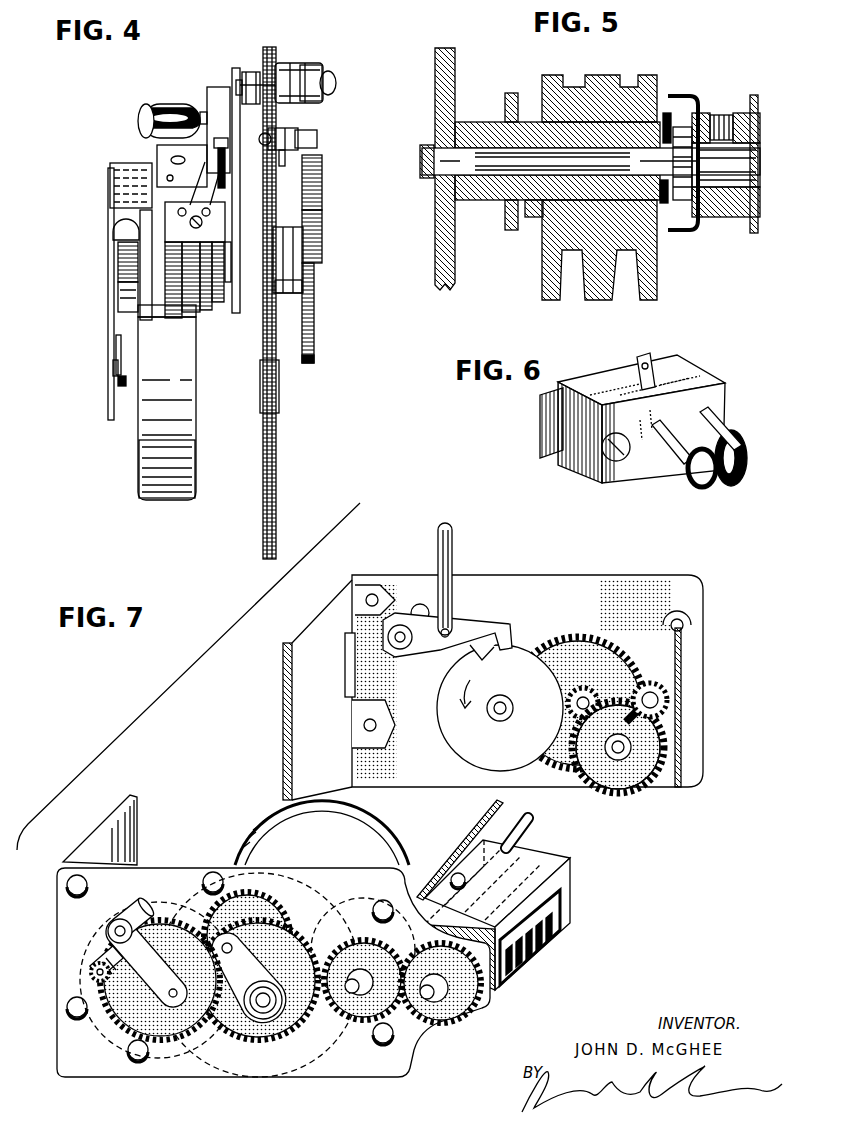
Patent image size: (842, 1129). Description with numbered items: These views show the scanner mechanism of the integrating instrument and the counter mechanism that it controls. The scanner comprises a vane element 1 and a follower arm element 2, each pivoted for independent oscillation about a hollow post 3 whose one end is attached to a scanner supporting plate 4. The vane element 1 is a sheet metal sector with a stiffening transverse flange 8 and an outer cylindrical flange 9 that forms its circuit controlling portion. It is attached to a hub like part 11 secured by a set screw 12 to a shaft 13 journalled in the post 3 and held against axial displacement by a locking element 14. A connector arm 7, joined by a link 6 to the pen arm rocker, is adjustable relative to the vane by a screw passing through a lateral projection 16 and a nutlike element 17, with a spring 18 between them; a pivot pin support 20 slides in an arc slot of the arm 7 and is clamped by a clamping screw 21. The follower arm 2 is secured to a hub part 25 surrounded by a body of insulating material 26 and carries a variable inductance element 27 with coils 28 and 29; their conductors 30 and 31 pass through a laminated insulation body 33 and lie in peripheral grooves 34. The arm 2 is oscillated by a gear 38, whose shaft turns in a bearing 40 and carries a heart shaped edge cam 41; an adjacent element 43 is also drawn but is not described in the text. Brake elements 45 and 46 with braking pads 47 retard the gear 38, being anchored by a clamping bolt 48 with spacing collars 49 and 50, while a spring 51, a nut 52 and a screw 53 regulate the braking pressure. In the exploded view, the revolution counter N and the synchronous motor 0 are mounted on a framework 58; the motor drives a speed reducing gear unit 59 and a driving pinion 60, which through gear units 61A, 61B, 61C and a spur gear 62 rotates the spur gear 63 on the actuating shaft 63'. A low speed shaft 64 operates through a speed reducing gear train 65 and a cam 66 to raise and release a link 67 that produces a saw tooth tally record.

In FIG. 4, the vane element 1 is at (138, 477).
In FIG. 5, the vane element 1 is at (700, 224).
In FIG. 4, the follower arm element 2 is at (229, 272).
In FIG. 5, the follower arm element 2 is at (508, 93).
In FIG. 6, the follower arm element 2 is at (540, 422).
In FIG. 5, the post 3 is at (482, 122).
In FIG. 4, the scanner supporting plate 4 is at (263, 463).
In FIG. 5, the scanner supporting plate 4 is at (435, 72).
In FIG. 4, the link 6 is at (116, 348).
In FIG. 4, the connector arm 7 is at (108, 328).
In FIG. 5, the connector arm 7 is at (757, 228).
In FIG. 4, the stiffening transverse flange 8 is at (140, 280).
In FIG. 5, the stiffening transverse flange 8 is at (672, 233).
In FIG. 4, the transverse flange 9 is at (138, 452).
In FIG. 5, the hub like part 11 is at (704, 113).
In FIG. 5, the set screw 12 is at (722, 115).
In FIG. 5, the shaft 13 is at (420, 163).
In FIG. 5, the locking element 14 is at (432, 140).
In FIG. 4, the lateral projection 16 is at (113, 243).
In FIG. 4, the nutlike element 17 is at (118, 298).
In FIG. 4, the spring 18 is at (118, 263).
In FIG. 4, the pivot pin support 20 is at (118, 384).
In FIG. 4, the clamping screw 21 is at (113, 370).
In FIG. 5, the hub part 25 is at (525, 218).
In FIG. 4, the body of insulating material 26 is at (220, 305).
In FIG. 5, the body of insulating material 26 is at (600, 76).
In FIG. 4, the variable inductance element 27 is at (217, 87).
In FIG. 6, the variable inductance element 27 is at (693, 372).
In FIG. 4, the inductance coil 28 is at (145, 128).
In FIG. 6, the inductance coil 28 is at (700, 486).
In FIG. 4, the inductance coil 29 is at (168, 104).
In FIG. 6, the inductance coil 29 is at (747, 465).
In FIG. 4, the conductor 30 is at (172, 320).
In FIG. 4, the conductor 31 is at (205, 312).
In FIG. 4, the laminated insulation body 33 is at (165, 210).
In FIG. 4, the peripheral grooves 34 is at (190, 315).
In FIG. 5, the peripheral grooves 34 is at (573, 280).
In FIG. 4, the gear 38 is at (314, 311).
In FIG. 4, the bearing 40 is at (285, 287).
In FIG. 4, the edge cam 41 is at (260, 328).
In FIG. 4, the gear 43 is at (250, 72).
In FIG. 4, the brake element 45 is at (322, 190).
In FIG. 4, the brake element 46 is at (322, 207).
In FIG. 4, the braking pads 47 is at (320, 255).
In FIG. 4, the clamping bolt 48 is at (336, 80).
In FIG. 4, the spacing collar 49 is at (286, 63).
In FIG. 4, the spacing collar 50 is at (314, 63).
In FIG. 4, the spring 51 is at (282, 166).
In FIG. 4, the nut 52 is at (320, 150).
In FIG. 4, the screw 53 is at (308, 130).
In FIG. 7, the framework 58 is at (135, 818).
In FIG. 7, the speed reducing gear unit 59 is at (108, 921).
In FIG. 7, the driving pinion 60 is at (92, 966).
In FIG. 7, the gear unit 61A is at (190, 1017).
In FIG. 7, the gear unit 61B is at (250, 900).
In FIG. 7, the gear unit 61C is at (283, 945).
In FIG. 7, the spur gear 62 is at (358, 1003).
In FIG. 7, the spur gear 63 is at (441, 998).
In FIG. 7, the actuating shaft 63' is at (458, 1010).
In FIG. 7, the low speed shaft 64 is at (630, 780).
In FIG. 7, the speed reducing gear train 65 is at (555, 632).
In FIG. 7, the cam 66 is at (520, 758).
In FIG. 7, the link 67 is at (452, 545).
In FIG. 7, the synchronous motor 0 is at (347, 840).
In FIG. 7, the revolution counter N is at (198, 661).